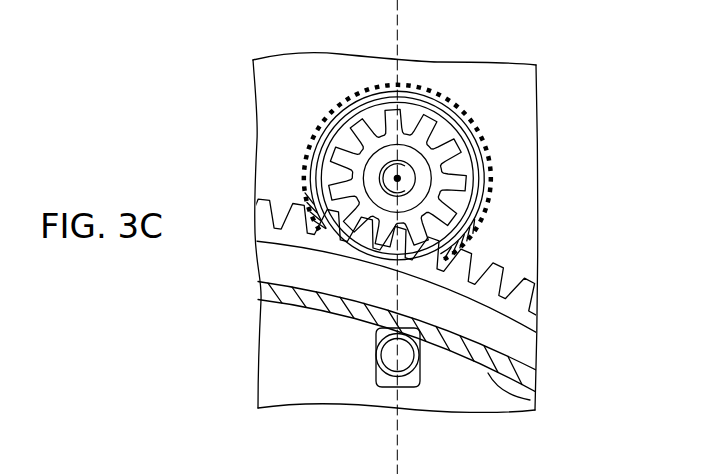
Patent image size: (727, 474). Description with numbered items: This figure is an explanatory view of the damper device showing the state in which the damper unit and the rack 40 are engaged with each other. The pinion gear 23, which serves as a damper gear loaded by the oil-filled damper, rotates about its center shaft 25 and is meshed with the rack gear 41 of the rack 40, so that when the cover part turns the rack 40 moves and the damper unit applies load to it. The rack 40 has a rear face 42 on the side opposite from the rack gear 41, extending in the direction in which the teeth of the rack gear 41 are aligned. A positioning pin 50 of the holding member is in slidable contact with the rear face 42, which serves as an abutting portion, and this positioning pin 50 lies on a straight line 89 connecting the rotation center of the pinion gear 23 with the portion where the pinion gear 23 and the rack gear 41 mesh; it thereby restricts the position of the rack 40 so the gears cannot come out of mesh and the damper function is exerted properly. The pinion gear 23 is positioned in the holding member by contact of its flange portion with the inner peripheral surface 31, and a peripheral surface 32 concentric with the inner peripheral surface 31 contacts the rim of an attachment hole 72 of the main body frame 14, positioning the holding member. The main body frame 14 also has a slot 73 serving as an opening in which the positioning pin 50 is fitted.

The main body frame 14 is at (497, 80).
The pinion gear 23 is at (415, 198).
The center shaft 25 is at (397, 178).
The inner peripheral surface 31 is at (432, 112).
The peripheral surface 32 is at (487, 237).
The rack 40 is at (500, 342).
The rack gear 41 is at (495, 298).
The rear face 42 is at (535, 400).
The positioning pin 50 is at (393, 357).
The attachment hole 72 is at (312, 173).
The slot 73 is at (381, 387).
The straight line 89 is at (399, 446).